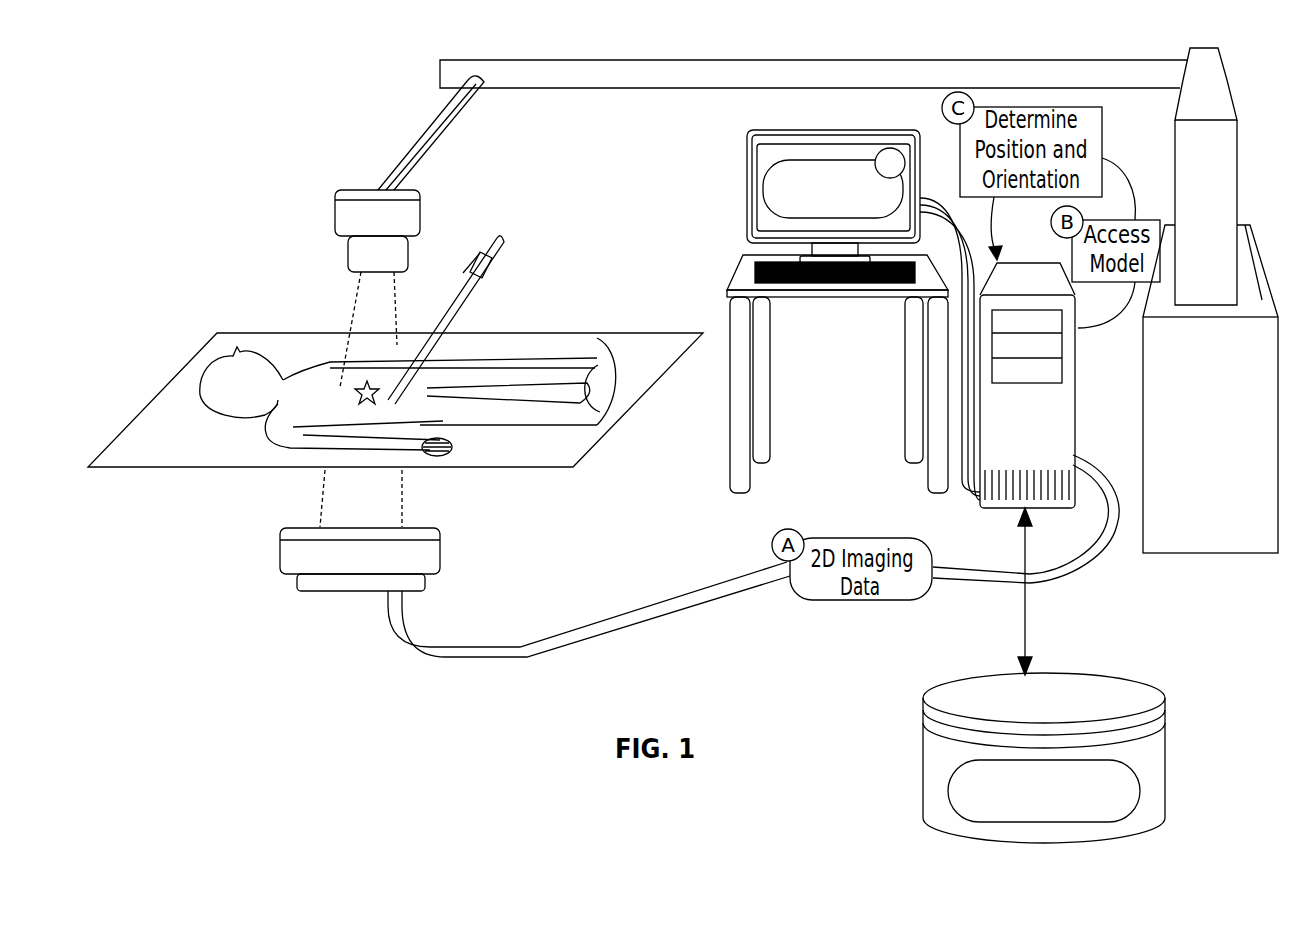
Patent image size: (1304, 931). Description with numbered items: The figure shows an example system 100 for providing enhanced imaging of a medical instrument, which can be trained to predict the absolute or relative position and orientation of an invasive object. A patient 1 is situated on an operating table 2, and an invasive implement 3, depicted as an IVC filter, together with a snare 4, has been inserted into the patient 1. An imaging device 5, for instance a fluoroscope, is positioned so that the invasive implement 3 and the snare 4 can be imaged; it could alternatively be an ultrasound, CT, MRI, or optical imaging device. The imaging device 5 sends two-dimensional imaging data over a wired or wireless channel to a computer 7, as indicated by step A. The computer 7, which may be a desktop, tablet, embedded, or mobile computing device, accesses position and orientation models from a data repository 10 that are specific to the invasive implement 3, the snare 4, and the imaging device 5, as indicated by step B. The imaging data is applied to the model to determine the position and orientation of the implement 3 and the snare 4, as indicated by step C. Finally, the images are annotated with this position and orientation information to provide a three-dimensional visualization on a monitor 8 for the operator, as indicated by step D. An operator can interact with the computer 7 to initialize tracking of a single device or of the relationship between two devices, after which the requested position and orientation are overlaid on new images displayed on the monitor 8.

The system 100 is at (230, 46).
The patient 1 is at (205, 370).
The operating table 2 is at (130, 425).
The invasive implement 3 is at (358, 400).
The snare 4 is at (497, 272).
The imaging device 5 is at (377, 288).
The computer 7 is at (1027, 385).
The monitor 8 is at (833, 196).
The data repository 10 is at (1044, 758).